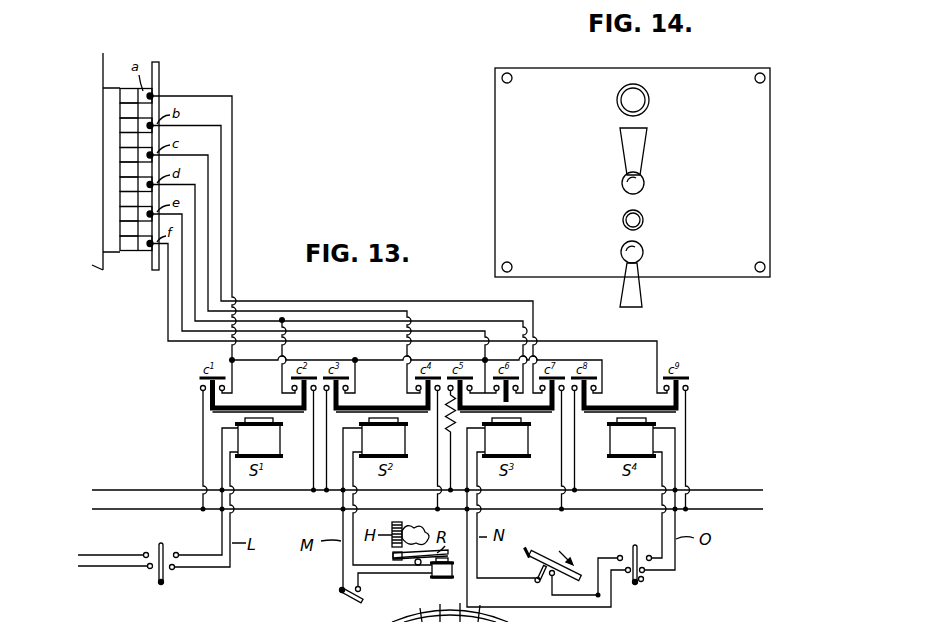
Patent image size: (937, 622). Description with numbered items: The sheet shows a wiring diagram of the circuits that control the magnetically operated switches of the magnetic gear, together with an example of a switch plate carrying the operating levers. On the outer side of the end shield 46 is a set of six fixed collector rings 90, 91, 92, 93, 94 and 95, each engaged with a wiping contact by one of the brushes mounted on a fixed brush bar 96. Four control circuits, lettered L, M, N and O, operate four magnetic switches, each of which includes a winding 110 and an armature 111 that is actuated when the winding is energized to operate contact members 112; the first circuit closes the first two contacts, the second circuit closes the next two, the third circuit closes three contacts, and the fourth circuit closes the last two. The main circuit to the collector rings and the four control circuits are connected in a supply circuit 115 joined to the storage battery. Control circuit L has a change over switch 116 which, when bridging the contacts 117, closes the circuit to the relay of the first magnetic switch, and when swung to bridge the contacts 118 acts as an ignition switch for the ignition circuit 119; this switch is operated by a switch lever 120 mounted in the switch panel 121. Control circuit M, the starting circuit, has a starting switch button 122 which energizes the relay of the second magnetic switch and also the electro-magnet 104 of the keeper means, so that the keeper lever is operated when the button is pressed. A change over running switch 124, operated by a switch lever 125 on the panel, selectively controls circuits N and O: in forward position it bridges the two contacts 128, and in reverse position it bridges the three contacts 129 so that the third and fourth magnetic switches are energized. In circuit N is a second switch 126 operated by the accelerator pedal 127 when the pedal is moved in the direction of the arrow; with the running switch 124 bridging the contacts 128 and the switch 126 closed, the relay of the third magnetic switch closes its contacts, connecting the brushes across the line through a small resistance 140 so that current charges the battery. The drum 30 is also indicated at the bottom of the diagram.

In FIG. 13, the end shield 46 is at (108, 59).
In FIG. 13, the brush bar 96 is at (159, 70).
In FIG. 13, the collector ring 90 is at (127, 96).
In FIG. 13, the collector ring 91 is at (127, 126).
In FIG. 13, the collector ring 92 is at (127, 155).
In FIG. 13, the collector ring 93 is at (127, 184).
In FIG. 13, the collector ring 94 is at (127, 214).
In FIG. 13, the collector ring 95 is at (127, 244).
In FIG. 13, the contact members 112 is at (200, 378).
In FIG. 13, the armature 111 is at (255, 406).
In FIG. 13, the winding 110 is at (272, 442).
In FIG. 13, the resistance 140 is at (446, 427).
In FIG. 13, the supply circuit 115 is at (735, 489).
In FIG. 13, the change over switch 116 is at (160, 545).
In FIG. 13, the contacts 117 is at (173, 571).
In FIG. 13, the contacts 118 is at (148, 569).
In FIG. 13, the ignition circuit 119 is at (92, 571).
In FIG. 13, the starting switch button 122 is at (343, 598).
In FIG. 14, the starting switch button 122 is at (650, 101).
In FIG. 13, the electro-magnet 104 is at (443, 580).
In FIG. 13, the drum 30 is at (410, 621).
In FIG. 13, the accelerator pedal 127 is at (545, 549).
In FIG. 13, the second switch 126 is at (551, 577).
In FIG. 13, the change over running switch 124 is at (633, 547).
In FIG. 13, the contacts 128 is at (618, 573).
In FIG. 13, the contacts 129 is at (645, 579).
In FIG. 14, the switch panel 121 is at (507, 155).
In FIG. 14, the switch lever 125 is at (627, 163).
In FIG. 14, the switch lever 120 is at (637, 296).